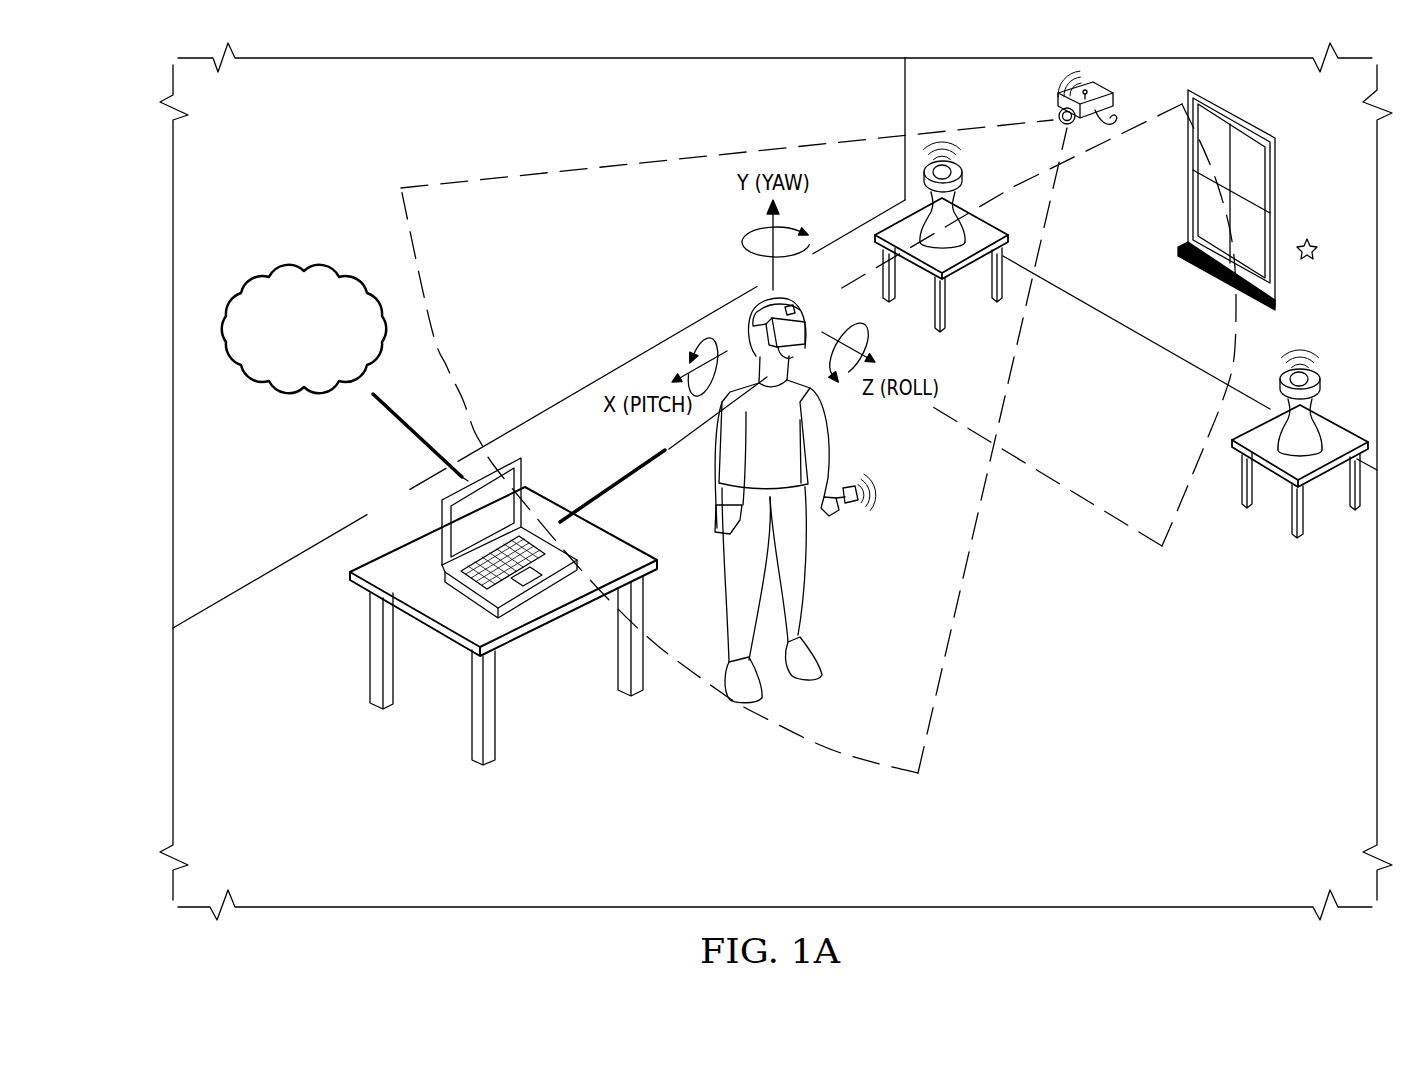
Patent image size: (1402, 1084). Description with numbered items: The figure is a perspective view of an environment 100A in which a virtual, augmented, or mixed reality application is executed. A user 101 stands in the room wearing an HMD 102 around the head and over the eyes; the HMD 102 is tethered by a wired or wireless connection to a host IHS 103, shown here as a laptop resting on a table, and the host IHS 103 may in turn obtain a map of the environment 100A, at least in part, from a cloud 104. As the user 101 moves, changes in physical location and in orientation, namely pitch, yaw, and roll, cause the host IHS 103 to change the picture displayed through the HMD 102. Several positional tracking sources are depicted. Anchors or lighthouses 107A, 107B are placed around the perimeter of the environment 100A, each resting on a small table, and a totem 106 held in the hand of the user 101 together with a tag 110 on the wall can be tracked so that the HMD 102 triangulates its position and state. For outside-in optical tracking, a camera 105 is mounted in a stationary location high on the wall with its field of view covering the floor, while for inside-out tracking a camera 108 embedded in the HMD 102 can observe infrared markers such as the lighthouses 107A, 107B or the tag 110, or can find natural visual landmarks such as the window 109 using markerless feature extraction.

The environment 100A is at (165, 216).
The user 101 is at (717, 485).
The HMD 102 is at (760, 307).
The host Information Handling System (IHS) 103 is at (440, 516).
The cloud 104 is at (323, 367).
The camera 105 is at (1118, 97).
The totem 106 is at (857, 503).
The lighthouse 107A is at (960, 178).
The lighthouse 107B is at (1318, 387).
The camera 108 is at (795, 309).
The window 109 is at (1278, 186).
The tag 110 is at (1318, 243).